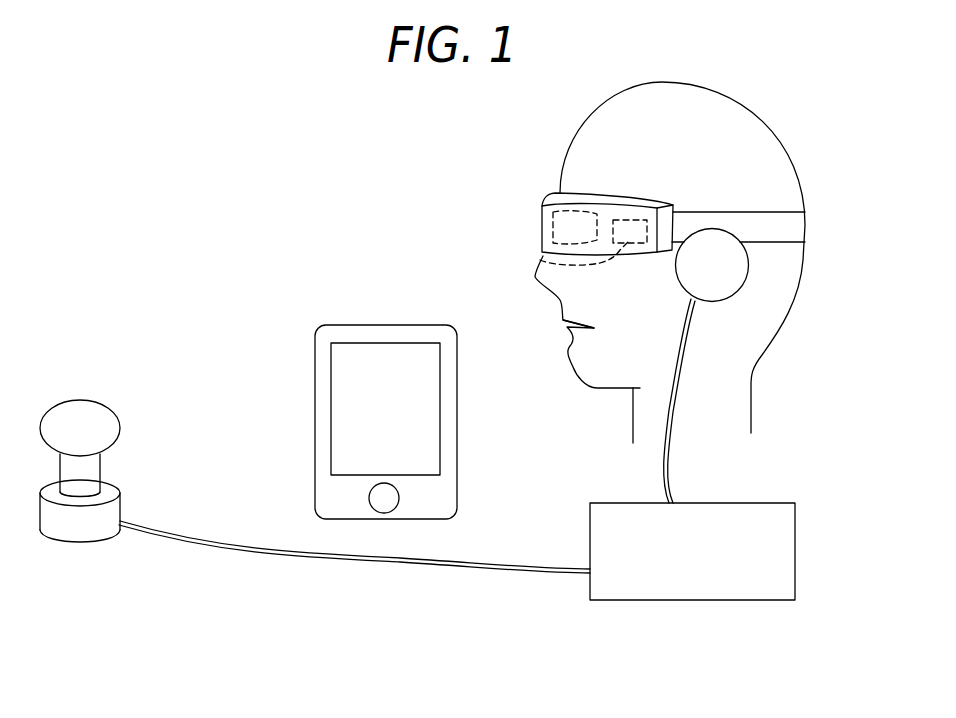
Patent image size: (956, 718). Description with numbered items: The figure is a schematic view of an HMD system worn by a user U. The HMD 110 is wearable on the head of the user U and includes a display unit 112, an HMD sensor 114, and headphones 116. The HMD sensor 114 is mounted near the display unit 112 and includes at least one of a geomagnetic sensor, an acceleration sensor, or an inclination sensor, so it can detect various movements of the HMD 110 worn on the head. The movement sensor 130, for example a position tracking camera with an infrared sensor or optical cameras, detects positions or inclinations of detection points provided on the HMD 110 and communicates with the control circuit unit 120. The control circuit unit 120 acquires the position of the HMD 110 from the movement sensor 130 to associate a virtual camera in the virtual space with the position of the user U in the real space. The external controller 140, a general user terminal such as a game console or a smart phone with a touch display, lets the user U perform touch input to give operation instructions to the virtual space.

The user U is at (783, 117).
The HMD 110 is at (538, 204).
The display unit 112 is at (546, 219).
The HMD sensor 114 is at (538, 260).
The headphones 116 is at (730, 243).
The control circuit unit 120 is at (772, 515).
The movement sensor 130 is at (75, 412).
The external controller 140 is at (372, 330).